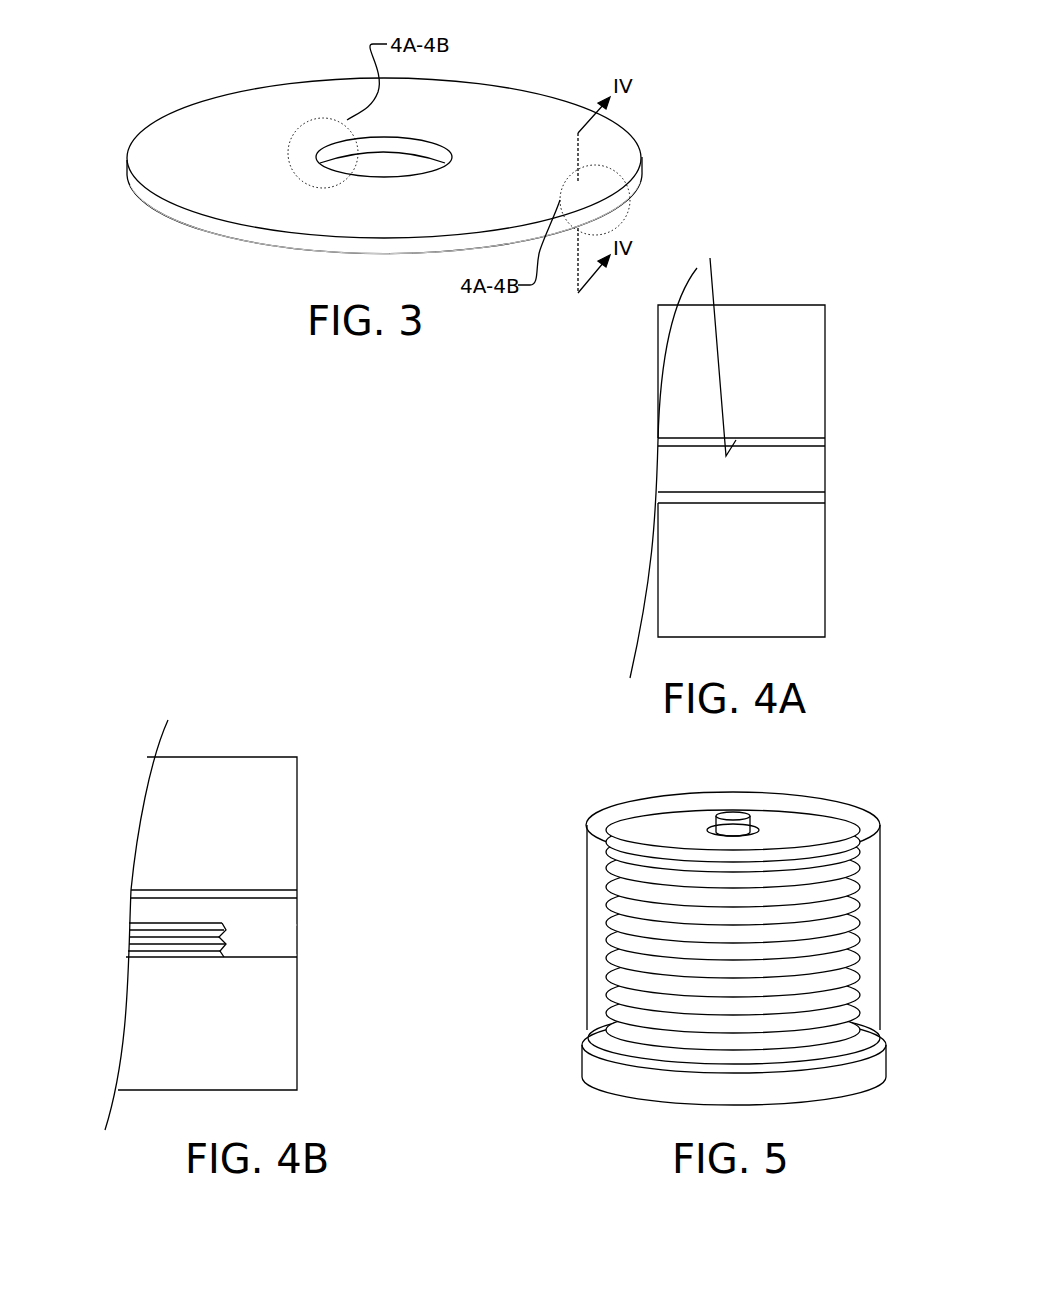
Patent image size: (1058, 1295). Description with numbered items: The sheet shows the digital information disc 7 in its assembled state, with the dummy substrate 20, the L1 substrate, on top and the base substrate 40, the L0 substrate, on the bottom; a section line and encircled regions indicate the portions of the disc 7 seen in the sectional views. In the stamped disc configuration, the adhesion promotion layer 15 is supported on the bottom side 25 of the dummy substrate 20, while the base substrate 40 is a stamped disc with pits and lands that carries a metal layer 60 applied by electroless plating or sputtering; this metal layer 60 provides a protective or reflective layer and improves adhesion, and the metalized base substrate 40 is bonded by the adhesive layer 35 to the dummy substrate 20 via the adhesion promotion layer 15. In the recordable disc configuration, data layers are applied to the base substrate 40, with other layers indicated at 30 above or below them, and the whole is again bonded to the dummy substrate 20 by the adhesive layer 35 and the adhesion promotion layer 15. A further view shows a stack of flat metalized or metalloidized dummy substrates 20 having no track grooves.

In FIG. 3, the digital information disc 7 is at (665, 53).
In FIG. 4A, the digital information disc 7 is at (862, 280).
In FIG. 4B, the digital information disc 7 is at (375, 762).
In FIG. 4A, the adhesion promotion layer 15 is at (795, 443).
In FIG. 4B, the adhesion promotion layer 15 is at (270, 896).
In FIG. 3, the dummy substrate 20 is at (215, 118).
In FIG. 4A, the dummy substrate 20 is at (798, 306).
In FIG. 4B, the dummy substrate 20 is at (268, 768).
In FIG. 5, the dummy substrate 20 is at (635, 829).
In FIG. 4A, the bottom side 25 is at (710, 258).
In FIG. 4B, the other layers 30 is at (268, 938).
In FIG. 4A, the adhesive layer 35 is at (815, 470).
In FIG. 4B, the adhesive layer 35 is at (293, 916).
In FIG. 3, the base substrate 40 is at (210, 232).
In FIG. 4A, the base substrate 40 is at (822, 585).
In FIG. 4B, the base substrate 40 is at (272, 1076).
In FIG. 4A, the metal layer 60 is at (727, 497).